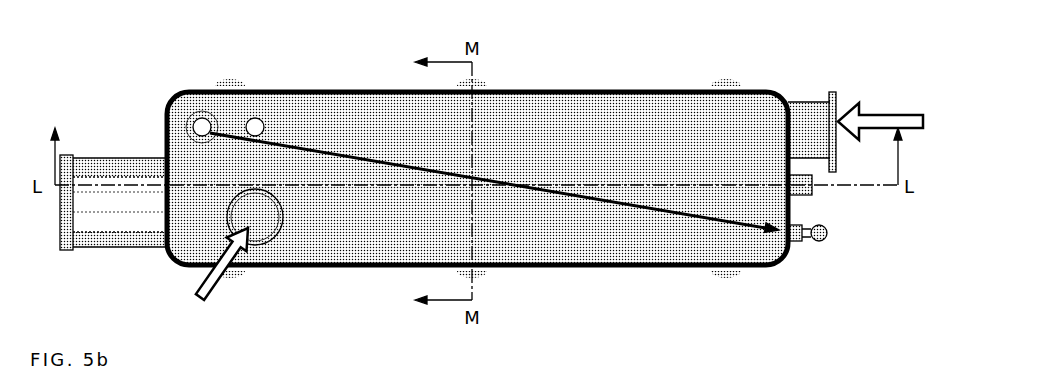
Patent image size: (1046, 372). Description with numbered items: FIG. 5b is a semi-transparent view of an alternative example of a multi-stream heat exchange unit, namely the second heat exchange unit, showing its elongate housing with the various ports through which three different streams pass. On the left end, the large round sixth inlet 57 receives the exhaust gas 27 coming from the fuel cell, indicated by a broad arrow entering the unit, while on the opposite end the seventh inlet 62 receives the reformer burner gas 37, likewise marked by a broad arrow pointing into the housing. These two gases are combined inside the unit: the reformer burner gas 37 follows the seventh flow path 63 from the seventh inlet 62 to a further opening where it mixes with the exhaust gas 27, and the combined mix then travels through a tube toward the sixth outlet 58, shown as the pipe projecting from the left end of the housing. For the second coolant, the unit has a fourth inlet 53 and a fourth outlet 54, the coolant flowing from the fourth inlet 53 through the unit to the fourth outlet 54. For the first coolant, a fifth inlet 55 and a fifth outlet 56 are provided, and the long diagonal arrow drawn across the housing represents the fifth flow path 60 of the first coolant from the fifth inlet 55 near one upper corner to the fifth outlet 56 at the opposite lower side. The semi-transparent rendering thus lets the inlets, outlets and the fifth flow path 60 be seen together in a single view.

The exhaust gas from fuel cell 27 is at (223, 283).
The gas from startup heater and reformer burner 37 is at (881, 112).
The fourth inlet 53 is at (813, 193).
The fourth outlet 54 is at (263, 127).
The fifth inlet 55 is at (202, 128).
The fifth outlet 56 is at (829, 238).
The sixth inlet 57 is at (263, 232).
The sixth outlet 58 is at (128, 215).
The fifth flow path 60 is at (622, 210).
The seventh inlet 62 is at (813, 102).
The seventh flow path 63 is at (506, 219).